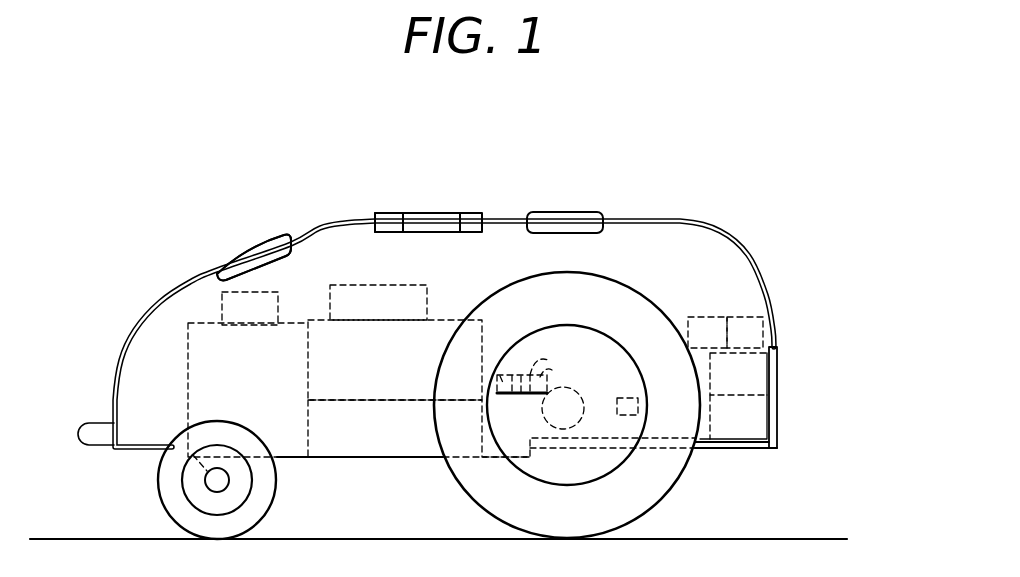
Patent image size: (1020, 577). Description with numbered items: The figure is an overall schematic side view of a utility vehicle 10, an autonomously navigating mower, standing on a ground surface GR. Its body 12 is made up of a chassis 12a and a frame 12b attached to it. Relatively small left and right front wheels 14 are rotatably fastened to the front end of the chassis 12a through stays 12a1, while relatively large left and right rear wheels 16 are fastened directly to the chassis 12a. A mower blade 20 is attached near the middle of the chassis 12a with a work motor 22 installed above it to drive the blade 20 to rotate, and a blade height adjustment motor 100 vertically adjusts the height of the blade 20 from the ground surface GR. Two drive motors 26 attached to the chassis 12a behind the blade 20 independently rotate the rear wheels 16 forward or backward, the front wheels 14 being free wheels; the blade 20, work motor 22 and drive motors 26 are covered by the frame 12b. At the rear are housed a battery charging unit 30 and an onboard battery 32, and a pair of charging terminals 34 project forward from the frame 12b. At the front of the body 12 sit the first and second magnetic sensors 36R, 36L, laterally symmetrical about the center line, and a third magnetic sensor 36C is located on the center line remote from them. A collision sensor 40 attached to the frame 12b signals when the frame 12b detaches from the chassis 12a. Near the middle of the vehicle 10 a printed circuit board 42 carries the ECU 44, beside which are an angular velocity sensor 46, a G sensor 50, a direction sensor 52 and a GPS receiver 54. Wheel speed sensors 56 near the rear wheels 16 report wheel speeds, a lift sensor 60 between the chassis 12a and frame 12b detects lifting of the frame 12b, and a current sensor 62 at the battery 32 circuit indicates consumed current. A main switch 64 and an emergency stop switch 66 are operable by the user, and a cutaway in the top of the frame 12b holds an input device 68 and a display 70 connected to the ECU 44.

The utility vehicle 10 is at (724, 224).
The body 12 is at (806, 407).
The chassis 12a is at (778, 428).
The frame 12b is at (790, 349).
The stays 12a1 is at (192, 481).
The front wheels 14 is at (163, 507).
The rear wheels 16 is at (461, 488).
The mower blade 20 is at (379, 440).
The work motor 22 is at (379, 369).
The drive motors 26 is at (582, 395).
The battery charging unit 30 is at (724, 388).
The onboard battery 32 is at (724, 430).
The charging terminals 34 is at (104, 423).
The second magnetic sensor 36L is at (250, 260).
The first magnetic sensor 36R is at (254, 258).
The third magnetic sensor 36C is at (575, 214).
The collision sensor 40 is at (236, 320).
The printed circuit board 42 is at (518, 397).
The ECU 44 is at (498, 362).
The angular velocity sensor 46 is at (498, 374).
The G sensor 50 is at (529, 374).
The direction sensor 52 is at (543, 360).
The GPS receiver 54 is at (550, 378).
The wheel speed sensors 56 is at (635, 398).
The lift sensor 60 is at (733, 344).
The current sensor 62 is at (695, 344).
The main switch 64 is at (390, 221).
The emergency stop switch 66 is at (389, 222).
The input device 68 is at (470, 221).
The display 70 is at (437, 221).
The blade height adjustment motor 100 is at (357, 313).
The ground surface GR is at (712, 539).